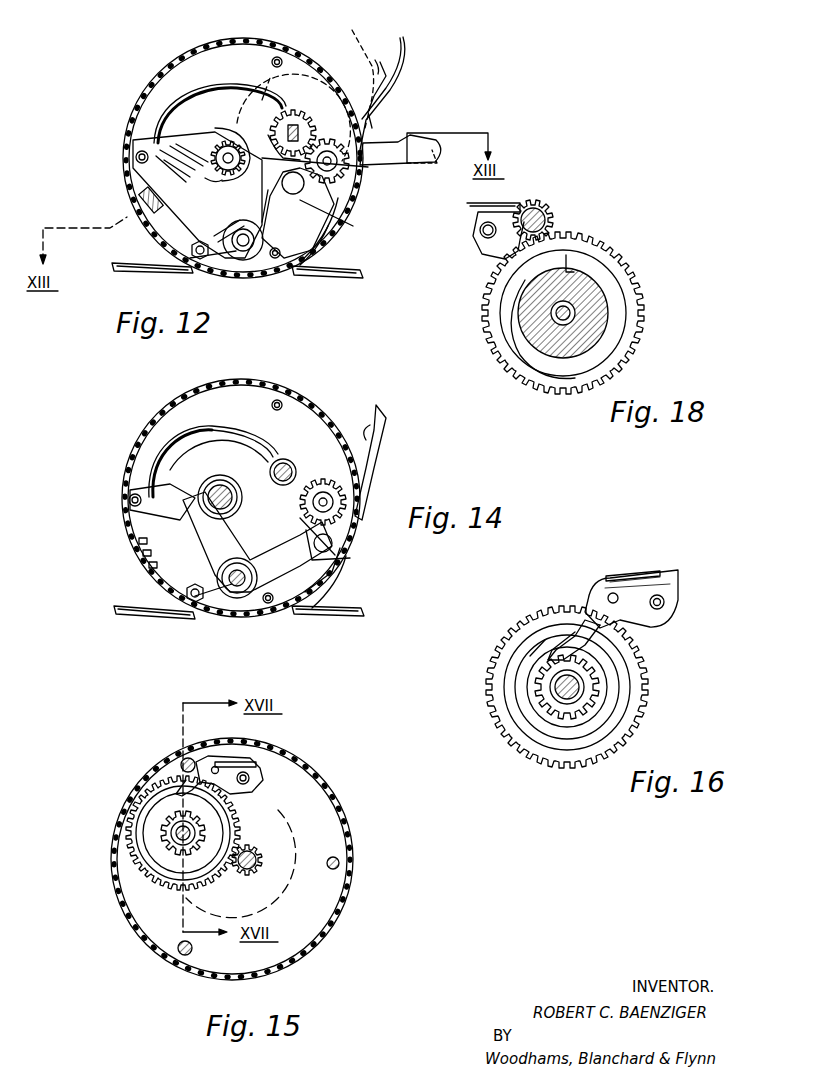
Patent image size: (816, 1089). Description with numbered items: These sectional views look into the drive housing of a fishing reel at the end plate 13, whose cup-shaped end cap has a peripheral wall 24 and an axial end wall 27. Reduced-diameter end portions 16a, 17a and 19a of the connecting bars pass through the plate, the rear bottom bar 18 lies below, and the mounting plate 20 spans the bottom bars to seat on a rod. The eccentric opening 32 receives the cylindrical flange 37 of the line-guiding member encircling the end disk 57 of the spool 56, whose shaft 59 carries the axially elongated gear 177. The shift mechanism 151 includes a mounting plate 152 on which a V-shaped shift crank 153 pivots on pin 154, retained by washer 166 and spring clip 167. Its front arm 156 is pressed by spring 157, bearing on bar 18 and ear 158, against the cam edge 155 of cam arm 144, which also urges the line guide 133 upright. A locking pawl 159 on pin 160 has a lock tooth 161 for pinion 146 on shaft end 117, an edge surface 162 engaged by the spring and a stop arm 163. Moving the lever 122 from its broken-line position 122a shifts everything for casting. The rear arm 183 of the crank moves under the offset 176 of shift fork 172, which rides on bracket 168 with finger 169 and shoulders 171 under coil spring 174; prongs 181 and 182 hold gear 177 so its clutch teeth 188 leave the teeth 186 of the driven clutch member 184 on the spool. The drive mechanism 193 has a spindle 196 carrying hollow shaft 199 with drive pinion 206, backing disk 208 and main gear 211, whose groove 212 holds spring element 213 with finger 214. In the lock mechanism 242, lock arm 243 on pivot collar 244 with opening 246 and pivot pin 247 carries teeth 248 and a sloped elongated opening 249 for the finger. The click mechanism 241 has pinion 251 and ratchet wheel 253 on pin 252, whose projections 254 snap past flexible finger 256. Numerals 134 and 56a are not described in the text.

In FIG. 14, the end plate 13 is at (230, 390).
In FIG. 12, the reduced-diameter end portion of rear bar 17a is at (136, 152).
In FIG. 14, the reduced-diameter end portion of rear bar 17a is at (129, 497).
In FIG. 15, the reduced-diameter end portion of rear bar 17a is at (340, 862).
In FIG. 12, the rear bottom connecting bar 18 is at (192, 264).
In FIG. 14, the rear bottom connecting bar 18 is at (190, 603).
In FIG. 12, the reduced-diameter end portion of front bottom bar 19a is at (276, 260).
In FIG. 14, the reduced-diameter end portion of front bottom bar 19a is at (272, 606).
In FIG. 15, the reduced-diameter end portion of front bottom bar 19a is at (184, 956).
In FIG. 12, the reduced-diameter end portion of top bar 16a is at (277, 56).
In FIG. 14, the reduced-diameter end portion of top bar 16a is at (278, 400).
In FIG. 15, the reduced-diameter end portion of top bar 16a is at (185, 757).
In FIG. 12, the mounting plate 20 is at (330, 278).
In FIG. 14, the mounting plate 20 is at (130, 614).
In FIG. 12, the peripheral wall 24 is at (170, 67).
In FIG. 14, the peripheral wall 24 is at (199, 392).
In FIG. 15, the peripheral wall 24 is at (332, 796).
In FIG. 12, the axial end wall 27 is at (246, 40).
In FIG. 15, the axial end wall 27 is at (292, 940).
In FIG. 12, the circular opening 32 is at (216, 88).
In FIG. 14, the circular opening 32 is at (243, 435).
In FIG. 12, the cylindrical flange 37 is at (178, 112).
In FIG. 14, the cylindrical flange 37 is at (201, 450).
In FIG. 14, the spool 56 is at (262, 448).
In FIG. 15, the dashed guide arc 56a is at (303, 896).
In FIG. 12, the axial end disk 57 is at (250, 98).
In FIG. 14, the axial end disk 57 is at (166, 452).
In FIG. 14, the spool shaft 59 is at (220, 484).
In FIG. 15, the spool shaft 59 is at (258, 853).
In FIG. 12, the left end portion of shaft 117 is at (345, 176).
In FIG. 14, the left end portion of shaft 117 is at (335, 505).
In FIG. 12, the lever 122 is at (428, 155).
In FIG. 14, the lever 122 is at (372, 407).
In FIG. 12, the broken line position of lever 122a is at (357, 72).
In FIG. 12, the line guide 133 is at (392, 94).
In FIG. 12, the arm end 134 is at (402, 36).
In FIG. 12, the cam arm 144 is at (343, 193).
In FIG. 14, the cam arm 144 is at (346, 526).
In FIG. 12, the pinion 146 is at (358, 168).
In FIG. 14, the pinion 146 is at (347, 494).
In FIG. 12, the shift mechanism 151 is at (238, 263).
In FIG. 14, the shift mechanism 151 is at (236, 600).
In FIG. 12, the mounting plate 152 is at (140, 168).
In FIG. 14, the mounting plate 152 is at (128, 513).
In FIG. 12, the shift crank 153 is at (167, 271).
In FIG. 14, the shift crank 153 is at (262, 612).
In FIG. 12, the pivot pin 154 is at (243, 250).
In FIG. 14, the pivot pin 154 is at (226, 600).
In FIG. 14, the cam edge 155 is at (322, 600).
In FIG. 12, the front arm 156 is at (314, 252).
In FIG. 14, the front arm 156 is at (310, 616).
In FIG. 12, the spring 157 is at (250, 254).
In FIG. 14, the spring 157 is at (233, 592).
In FIG. 12, the ear 158 is at (289, 217).
In FIG. 12, the locking pawl 159 is at (272, 152).
In FIG. 14, the locking pawl 159 is at (340, 566).
In FIG. 14, the pin 160 is at (333, 548).
In FIG. 12, the lock tooth 161 is at (320, 140).
In FIG. 14, the lock tooth 161 is at (306, 521).
In FIG. 12, the edge surface 162 is at (263, 206).
In FIG. 14, the edge surface 162 is at (330, 576).
In FIG. 12, the stop arm 163 is at (333, 216).
In FIG. 12, the washer 166 is at (232, 254).
In FIG. 12, the spring clip 167 is at (228, 228).
In FIG. 14, the shift fork bracket 168 is at (138, 540).
In FIG. 14, the finger 169 is at (142, 553).
In FIG. 14, the shoulders 171 is at (148, 566).
In FIG. 12, the shift fork 172 is at (138, 193).
In FIG. 12, the coil spring 174 is at (180, 166).
In FIG. 12, the inwardly offset portion 176 is at (183, 227).
In FIG. 12, the axially elongated gear 177 is at (228, 152).
In FIG. 14, the axially elongated gear 177 is at (213, 486).
In FIG. 15, the axially elongated gear 177 is at (262, 864).
In FIG. 12, the prong 181 is at (216, 143).
In FIG. 12, the prong 182 is at (210, 182).
In FIG. 12, the rear arm 183 is at (216, 158).
In FIG. 14, the rear arm 183 is at (196, 512).
In FIG. 14, the driven clutch member 184 is at (236, 477).
In FIG. 14, the clutch teeth 186 is at (243, 498).
In FIG. 14, the clutch teeth 188 is at (200, 488).
In FIG. 15, the drive mechanism 193 is at (132, 880).
In FIG. 14, the spindle 196 is at (292, 465).
In FIG. 15, the spindle 196 is at (170, 832).
In FIG. 18, the spindle 196 is at (578, 320).
In FIG. 18, the hollow shaft 199 is at (574, 306).
In FIG. 12, the drive pinion 206 is at (296, 110).
In FIG. 15, the drive pinion 206 is at (165, 852).
In FIG. 16, the drive pinion 206 is at (555, 720).
In FIG. 15, the backing disk 208 is at (213, 822).
In FIG. 16, the backing disk 208 is at (526, 677).
In FIG. 12, the main gear 211 is at (299, 76).
In FIG. 15, the main gear 211 is at (170, 888).
In FIG. 16, the main gear 211 is at (650, 698).
In FIG. 18, the main gear 211 is at (638, 345).
In FIG. 15, the annular groove 212 is at (142, 808).
In FIG. 16, the annular groove 212 is at (500, 703).
In FIG. 18, the annular groove 212 is at (553, 382).
In FIG. 18, the circular spring element 213 is at (518, 338).
In FIG. 15, the finger 214 is at (176, 782).
In FIG. 16, the finger 214 is at (576, 616).
In FIG. 18, the finger 214 is at (572, 258).
In FIG. 15, the click mechanism 241 is at (262, 768).
In FIG. 16, the click mechanism 241 is at (663, 568).
In FIG. 18, the click mechanism 241 is at (563, 213).
In FIG. 15, the lock mechanism 242 is at (180, 776).
In FIG. 16, the lock mechanism 242 is at (548, 640).
In FIG. 15, the lock arm 243 is at (254, 790).
In FIG. 16, the lock arm 243 is at (648, 626).
In FIG. 18, the lock arm 243 is at (488, 250).
In FIG. 18, the pivot collar 244 is at (483, 246).
In FIG. 18, the opening 246 is at (479, 230).
In FIG. 15, the pivot pin 247 is at (252, 778).
In FIG. 16, the pivot pin 247 is at (668, 603).
In FIG. 16, the teeth 248 is at (528, 648).
In FIG. 16, the elongated opening 249 is at (620, 656).
In FIG. 18, the pinion 251 is at (556, 227).
In FIG. 16, the pin 252 is at (613, 592).
In FIG. 18, the pin 252 is at (528, 204).
In FIG. 15, the ratchet wheel 253 is at (210, 760).
In FIG. 16, the ratchet wheel 253 is at (590, 588).
In FIG. 16, the projections 254 is at (604, 580).
In FIG. 18, the projections 254 is at (541, 206).
In FIG. 15, the flexible finger 256 is at (236, 760).
In FIG. 16, the flexible finger 256 is at (641, 571).
In FIG. 18, the flexible finger 256 is at (476, 213).